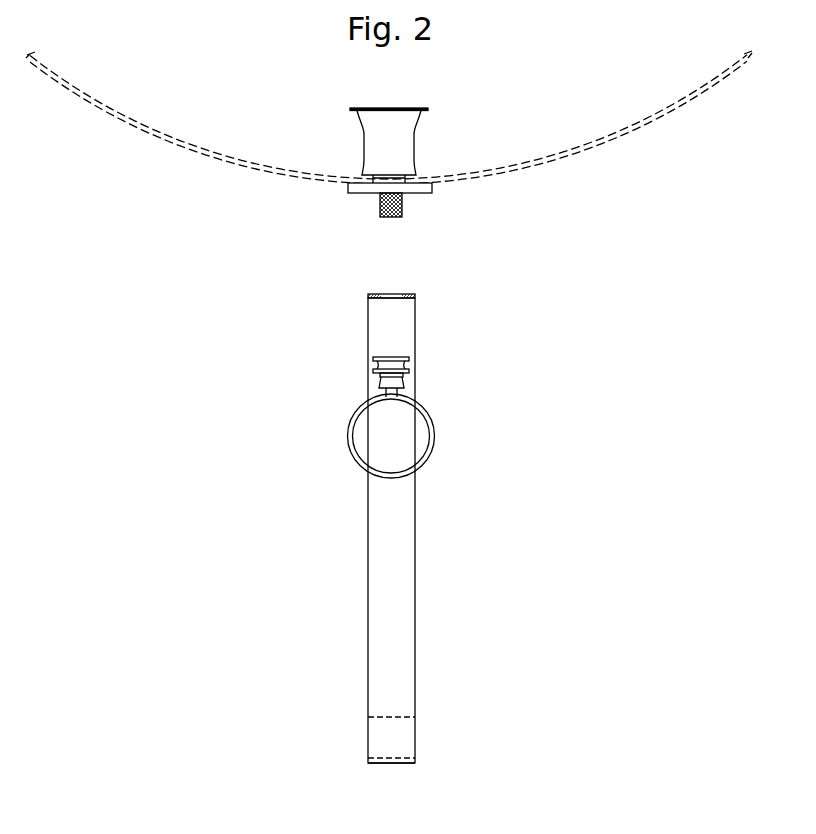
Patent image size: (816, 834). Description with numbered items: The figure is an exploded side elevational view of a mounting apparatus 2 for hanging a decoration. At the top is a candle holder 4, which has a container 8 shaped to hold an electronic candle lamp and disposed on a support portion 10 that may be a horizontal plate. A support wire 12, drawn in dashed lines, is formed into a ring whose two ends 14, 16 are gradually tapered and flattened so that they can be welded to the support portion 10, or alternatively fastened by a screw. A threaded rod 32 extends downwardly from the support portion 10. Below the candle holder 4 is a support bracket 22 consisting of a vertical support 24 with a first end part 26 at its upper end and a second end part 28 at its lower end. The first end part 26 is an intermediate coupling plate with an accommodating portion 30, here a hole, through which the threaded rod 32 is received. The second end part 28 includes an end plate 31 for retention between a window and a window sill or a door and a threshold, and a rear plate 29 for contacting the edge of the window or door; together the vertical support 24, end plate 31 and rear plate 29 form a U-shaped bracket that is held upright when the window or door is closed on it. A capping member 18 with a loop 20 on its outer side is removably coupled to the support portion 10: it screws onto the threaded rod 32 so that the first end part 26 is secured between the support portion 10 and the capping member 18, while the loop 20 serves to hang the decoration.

The mounting apparatus 2 is at (510, 444).
The candle holder 4 is at (308, 116).
The container 8 is at (388, 108).
The support portion 10 is at (420, 192).
The support wire 12 is at (622, 131).
The end of support wire 14 is at (365, 180).
The end of support wire 16 is at (415, 180).
The capping member 18 is at (428, 374).
The loop 20 is at (430, 452).
The support bracket 22 is at (345, 572).
The vertical support 24 is at (405, 562).
The first end part 26 is at (407, 294).
The second end part 28 is at (380, 758).
The rear plate 29 is at (380, 717).
The accommodating portion 30 is at (390, 294).
The end plate 31 is at (390, 764).
The threaded rod 32 is at (378, 204).